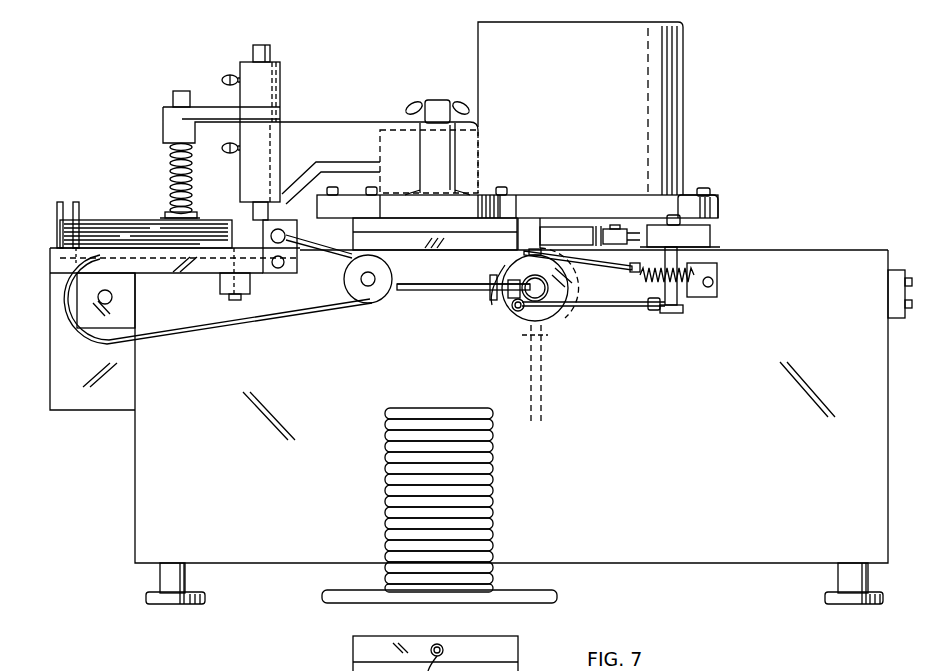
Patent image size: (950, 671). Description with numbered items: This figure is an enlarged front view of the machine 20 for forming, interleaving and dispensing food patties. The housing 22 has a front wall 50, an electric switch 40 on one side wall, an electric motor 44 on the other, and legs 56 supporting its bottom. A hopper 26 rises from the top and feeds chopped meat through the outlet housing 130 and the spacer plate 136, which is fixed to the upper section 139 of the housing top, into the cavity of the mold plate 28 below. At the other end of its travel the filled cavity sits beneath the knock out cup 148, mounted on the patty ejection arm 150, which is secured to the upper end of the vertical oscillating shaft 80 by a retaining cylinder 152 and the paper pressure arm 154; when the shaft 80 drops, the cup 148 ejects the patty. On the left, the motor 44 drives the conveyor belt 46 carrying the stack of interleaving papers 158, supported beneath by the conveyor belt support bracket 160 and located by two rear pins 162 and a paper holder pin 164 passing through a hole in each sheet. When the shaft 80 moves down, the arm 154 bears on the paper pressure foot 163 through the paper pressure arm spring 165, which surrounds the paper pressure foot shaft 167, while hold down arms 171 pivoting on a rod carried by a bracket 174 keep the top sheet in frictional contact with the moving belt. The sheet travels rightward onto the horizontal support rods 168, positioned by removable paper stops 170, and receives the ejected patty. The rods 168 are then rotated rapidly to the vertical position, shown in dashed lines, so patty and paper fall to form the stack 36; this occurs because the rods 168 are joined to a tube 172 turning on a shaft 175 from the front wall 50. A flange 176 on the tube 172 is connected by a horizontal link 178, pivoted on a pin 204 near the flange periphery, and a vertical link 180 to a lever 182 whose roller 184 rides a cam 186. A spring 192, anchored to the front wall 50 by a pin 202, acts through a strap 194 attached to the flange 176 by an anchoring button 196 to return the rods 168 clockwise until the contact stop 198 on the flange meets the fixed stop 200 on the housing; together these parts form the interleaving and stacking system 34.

The machine for forming, interleaving and dispensing food patties 20 is at (77, 103).
The housing 22 is at (826, 250).
The hopper 26 is at (676, 50).
The mold plate 28 is at (485, 243).
The interleaving and stacking system 34 is at (618, 328).
The stack of interleaved patties 36 is at (490, 488).
The electric switch 40 is at (902, 262).
The electric motor 44 is at (72, 405).
The conveyor belt 46 is at (287, 323).
The front wall 50 is at (690, 441).
The legs 56 is at (187, 580).
The vertical oscillating shaft 80 is at (266, 48).
The outlet housing 130 is at (397, 177).
The spacer plate 136 is at (503, 227).
The upper section of the top of the housing 139 is at (685, 210).
The knock out cup 148 is at (480, 200).
The patty ejection arm 150 is at (362, 120).
The retaining cylinder 152 is at (268, 85).
The paper pressure arm 154 is at (210, 112).
The stack of interleaving papers 158 is at (133, 233).
The conveyor belt support bracket 160 is at (170, 268).
The rear pins 162 is at (57, 217).
The paper pressure foot 163 is at (167, 217).
The paper holder pin 164 is at (77, 204).
The paper pressure arm spring 165 is at (190, 207).
The paper pressure foot shaft 167 is at (173, 163).
The support rods 168 is at (415, 289).
The removable paper stops 170 is at (505, 265).
The hold down arms 171 is at (332, 250).
The tube 172 is at (560, 268).
The bracket 174 is at (273, 273).
The shaft 175 is at (540, 295).
The flange 176 is at (560, 290).
The horizontal link 178 is at (622, 307).
The vertical link 180 is at (665, 291).
The lever 182 is at (697, 243).
The roller 184 is at (603, 240).
The cam 186 is at (572, 233).
The spring 192 is at (683, 287).
The strap 194 is at (632, 240).
The anchoring button 196 is at (517, 258).
The contact stop 198 is at (472, 290).
The fixed stop 200 is at (533, 240).
The pin 202 is at (717, 283).
The pin 204 is at (516, 310).